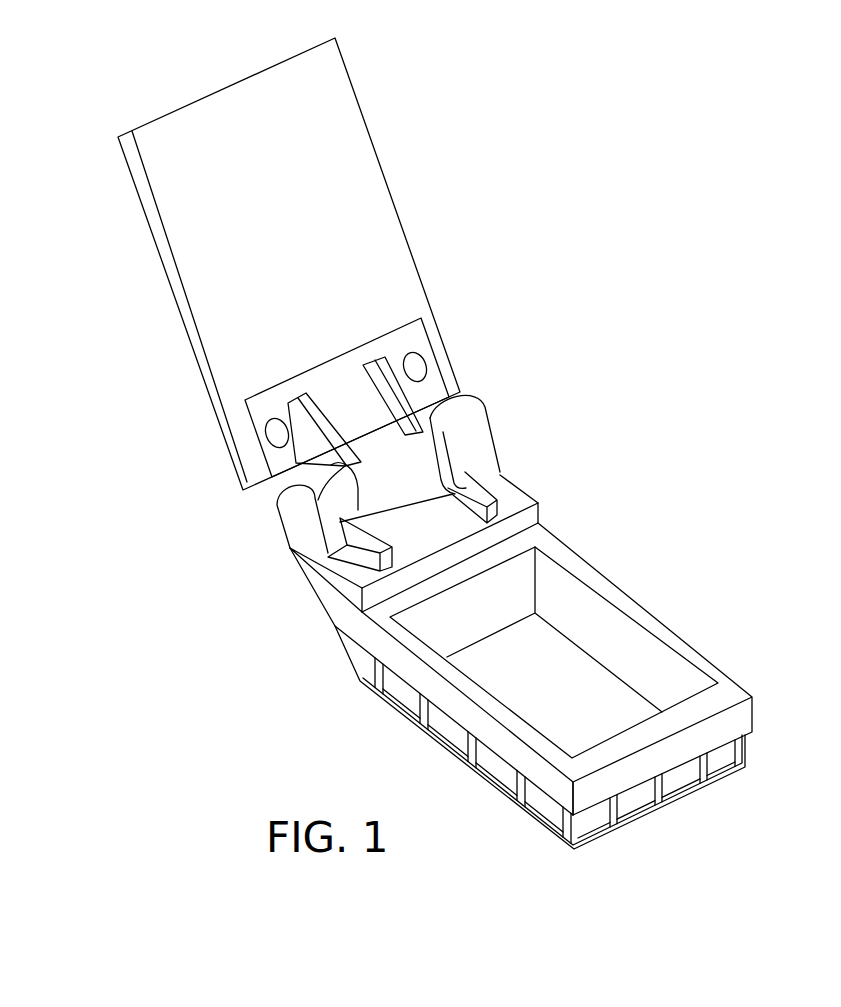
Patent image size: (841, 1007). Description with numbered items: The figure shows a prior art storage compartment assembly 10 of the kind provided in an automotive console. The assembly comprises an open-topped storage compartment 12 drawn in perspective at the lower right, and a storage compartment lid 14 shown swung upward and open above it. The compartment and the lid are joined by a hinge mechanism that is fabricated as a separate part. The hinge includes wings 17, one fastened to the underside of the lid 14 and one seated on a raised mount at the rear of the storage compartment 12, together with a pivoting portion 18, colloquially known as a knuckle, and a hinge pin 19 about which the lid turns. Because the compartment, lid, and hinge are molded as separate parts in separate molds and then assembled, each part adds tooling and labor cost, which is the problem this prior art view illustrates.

The storage compartment assembly 10 is at (560, 214).
The storage compartment 12 is at (727, 697).
The storage compartment lid 14 is at (361, 172).
The wings 17 is at (417, 333).
The pivoting portion 18 is at (412, 467).
The hinge pin 19 is at (292, 517).